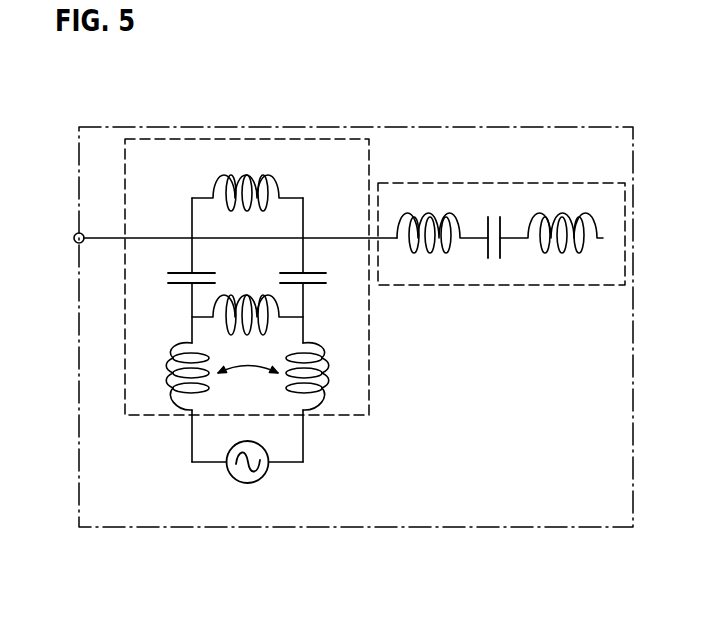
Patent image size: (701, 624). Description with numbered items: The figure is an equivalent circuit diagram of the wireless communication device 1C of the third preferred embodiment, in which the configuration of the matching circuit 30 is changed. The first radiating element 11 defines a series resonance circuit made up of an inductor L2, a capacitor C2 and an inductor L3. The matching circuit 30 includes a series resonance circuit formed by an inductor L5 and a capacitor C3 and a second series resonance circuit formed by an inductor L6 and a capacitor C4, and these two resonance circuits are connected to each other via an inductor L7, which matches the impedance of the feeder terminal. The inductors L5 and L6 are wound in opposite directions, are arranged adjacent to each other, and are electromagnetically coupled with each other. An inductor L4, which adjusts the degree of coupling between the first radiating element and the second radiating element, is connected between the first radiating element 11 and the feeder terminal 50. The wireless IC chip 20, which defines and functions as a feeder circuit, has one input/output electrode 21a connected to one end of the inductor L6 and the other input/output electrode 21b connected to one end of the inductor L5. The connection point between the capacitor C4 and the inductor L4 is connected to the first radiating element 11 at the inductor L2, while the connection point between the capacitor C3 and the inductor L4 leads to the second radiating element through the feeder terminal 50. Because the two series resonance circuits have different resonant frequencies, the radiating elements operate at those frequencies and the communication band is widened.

The wireless communication device 1C is at (611, 127).
The matching circuit 30 is at (207, 141).
The first radiating element 11 is at (429, 183).
The feeder terminal 50 is at (75, 242).
The wireless IC chip 20 is at (248, 484).
The input/output electrode 21a is at (268, 468).
The input/output electrode 21b is at (227, 468).
The inductor L4 is at (247, 179).
The inductor L7 is at (247, 301).
The inductor L5 is at (174, 376).
The inductor L6 is at (322, 376).
The capacitor C3 is at (176, 278).
The capacitor C4 is at (318, 278).
The inductor L2 is at (442, 221).
The capacitor C2 is at (495, 223).
The inductor L3 is at (551, 221).